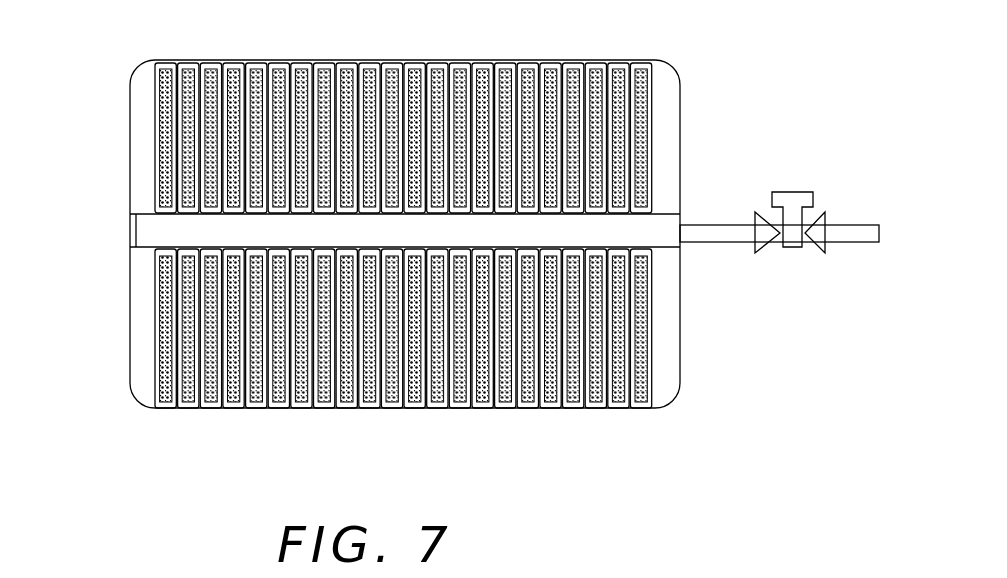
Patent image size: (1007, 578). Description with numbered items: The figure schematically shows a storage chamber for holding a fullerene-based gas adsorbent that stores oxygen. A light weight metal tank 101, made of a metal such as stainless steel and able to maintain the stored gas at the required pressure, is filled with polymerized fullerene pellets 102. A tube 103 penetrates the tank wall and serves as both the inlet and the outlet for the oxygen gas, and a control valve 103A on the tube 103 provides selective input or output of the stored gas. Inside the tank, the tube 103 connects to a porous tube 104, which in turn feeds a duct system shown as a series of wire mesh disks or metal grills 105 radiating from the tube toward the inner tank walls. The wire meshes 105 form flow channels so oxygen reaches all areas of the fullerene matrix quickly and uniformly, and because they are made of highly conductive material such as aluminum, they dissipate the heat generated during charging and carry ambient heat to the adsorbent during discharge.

The light weight metal tank 101 is at (216, 60).
The polymerized fullerene pellets 102 is at (622, 70).
The tube 103 is at (683, 232).
The control valve 103A is at (843, 176).
The porous tube 104 is at (148, 225).
The wire mesh disks or metal grills 105 is at (605, 410).